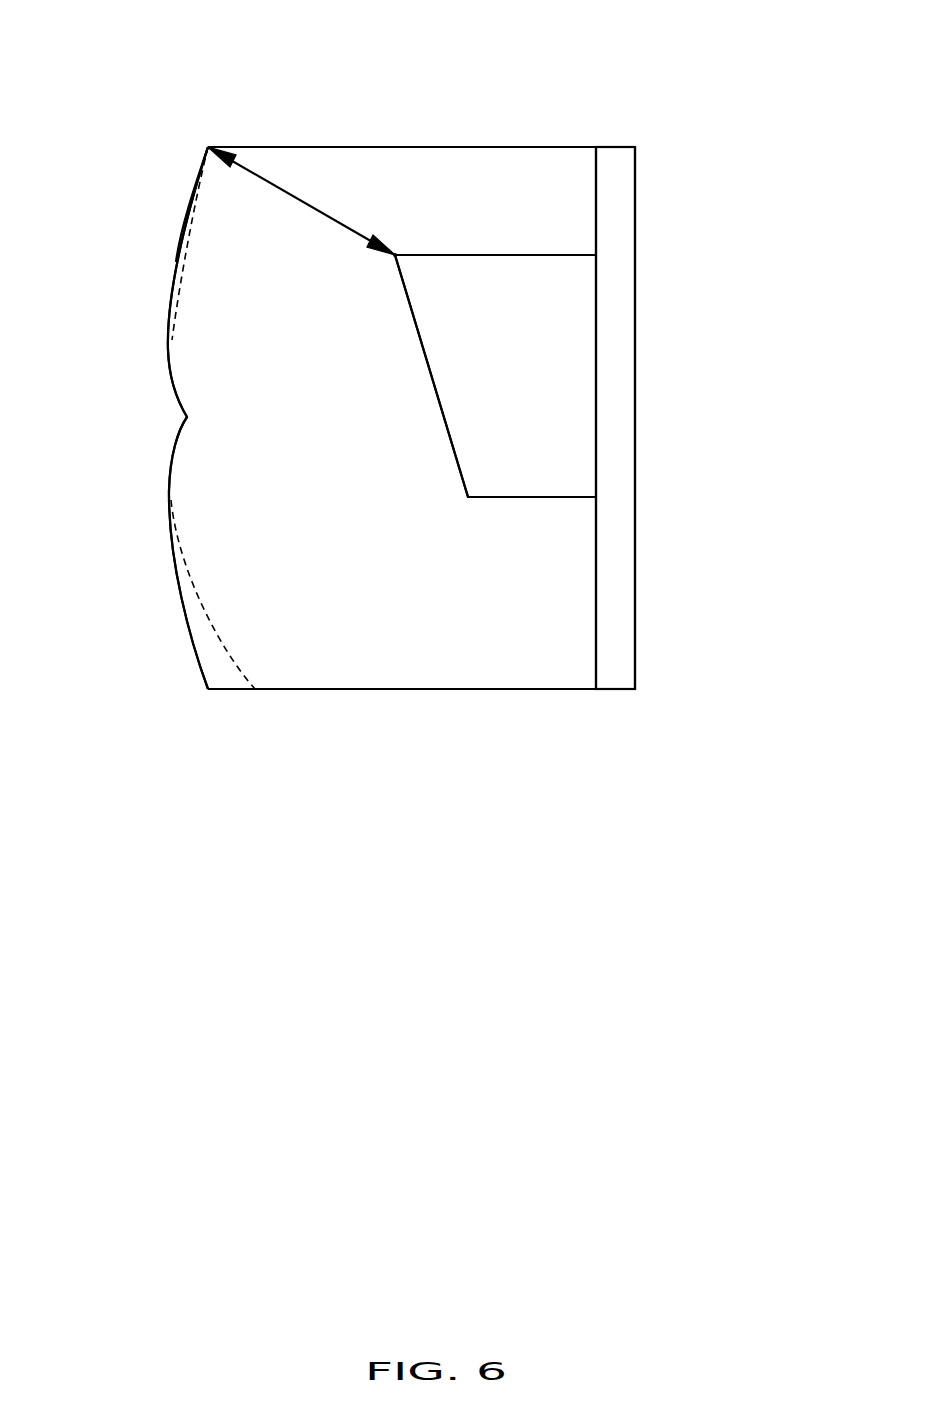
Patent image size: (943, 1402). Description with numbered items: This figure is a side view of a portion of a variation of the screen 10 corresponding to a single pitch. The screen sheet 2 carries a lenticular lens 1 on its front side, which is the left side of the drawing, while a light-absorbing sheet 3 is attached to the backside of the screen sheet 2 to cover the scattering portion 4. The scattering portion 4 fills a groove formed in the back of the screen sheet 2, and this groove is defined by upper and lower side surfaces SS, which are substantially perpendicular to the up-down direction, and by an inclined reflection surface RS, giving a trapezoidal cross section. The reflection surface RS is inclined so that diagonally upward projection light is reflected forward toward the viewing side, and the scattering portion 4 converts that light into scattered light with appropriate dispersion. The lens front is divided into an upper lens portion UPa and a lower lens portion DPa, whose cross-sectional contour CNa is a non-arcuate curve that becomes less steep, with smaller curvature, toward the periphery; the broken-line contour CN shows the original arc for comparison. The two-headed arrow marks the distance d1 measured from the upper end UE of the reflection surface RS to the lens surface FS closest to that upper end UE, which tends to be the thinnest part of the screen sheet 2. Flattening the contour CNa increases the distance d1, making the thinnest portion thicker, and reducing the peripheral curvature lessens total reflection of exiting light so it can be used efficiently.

The screen 10 is at (829, 87).
The lenticular lens 1 is at (315, 165).
The screen sheet 2 is at (472, 163).
The light-absorbing sheet 3 is at (617, 250).
The scattering portion 4 is at (573, 432).
The side surface SS is at (532, 253).
The reflection surface RS is at (437, 402).
The upper end UE is at (405, 282).
The lens surface FS is at (208, 145).
The lens portion UPa is at (203, 180).
The contour CNa is at (187, 217).
The contour CN is at (203, 210).
The lens portion DPa is at (208, 647).
The distance d1 is at (390, 254).